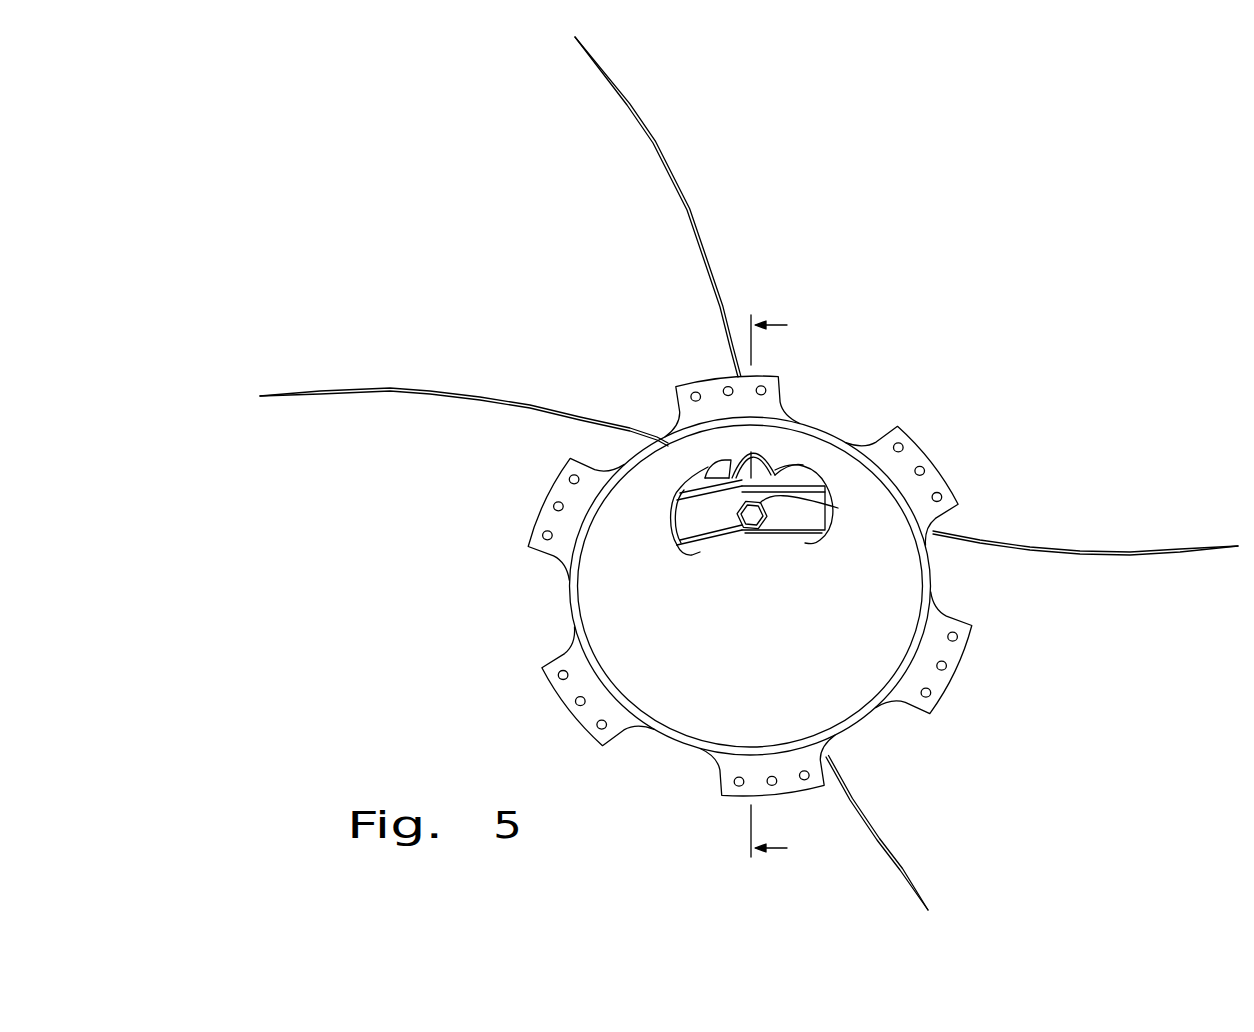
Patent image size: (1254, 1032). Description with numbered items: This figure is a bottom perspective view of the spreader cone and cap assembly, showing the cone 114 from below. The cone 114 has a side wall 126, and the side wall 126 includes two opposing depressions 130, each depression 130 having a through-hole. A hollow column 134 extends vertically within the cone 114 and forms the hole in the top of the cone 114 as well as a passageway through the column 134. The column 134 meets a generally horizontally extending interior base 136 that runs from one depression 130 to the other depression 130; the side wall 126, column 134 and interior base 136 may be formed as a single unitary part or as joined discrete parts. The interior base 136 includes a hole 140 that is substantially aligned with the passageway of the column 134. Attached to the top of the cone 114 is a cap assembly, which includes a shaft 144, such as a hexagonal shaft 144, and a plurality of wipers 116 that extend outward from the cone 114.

The cone 114 is at (989, 408).
The wipers 116 is at (688, 212).
The side wall 126 is at (820, 693).
The depression 130 is at (700, 472).
The hollow column 134 is at (762, 465).
The interior base 136 is at (698, 527).
The hole 140 is at (838, 508).
The shaft 144 is at (752, 517).